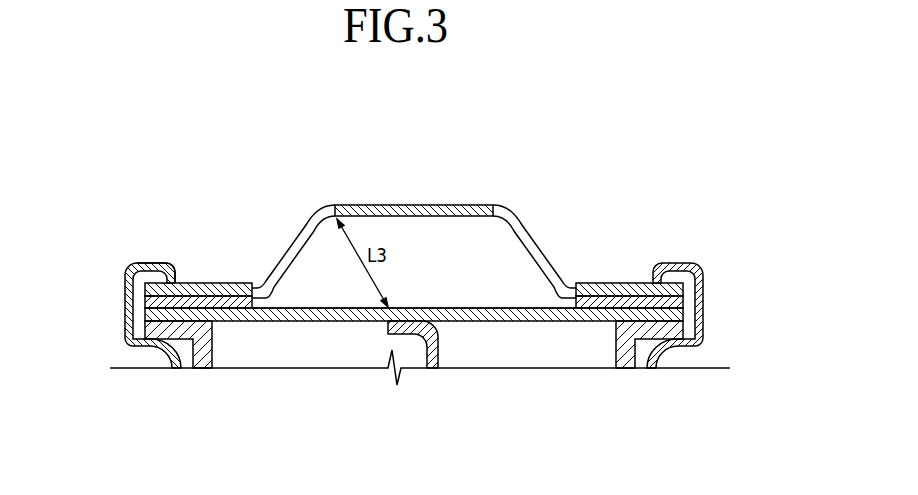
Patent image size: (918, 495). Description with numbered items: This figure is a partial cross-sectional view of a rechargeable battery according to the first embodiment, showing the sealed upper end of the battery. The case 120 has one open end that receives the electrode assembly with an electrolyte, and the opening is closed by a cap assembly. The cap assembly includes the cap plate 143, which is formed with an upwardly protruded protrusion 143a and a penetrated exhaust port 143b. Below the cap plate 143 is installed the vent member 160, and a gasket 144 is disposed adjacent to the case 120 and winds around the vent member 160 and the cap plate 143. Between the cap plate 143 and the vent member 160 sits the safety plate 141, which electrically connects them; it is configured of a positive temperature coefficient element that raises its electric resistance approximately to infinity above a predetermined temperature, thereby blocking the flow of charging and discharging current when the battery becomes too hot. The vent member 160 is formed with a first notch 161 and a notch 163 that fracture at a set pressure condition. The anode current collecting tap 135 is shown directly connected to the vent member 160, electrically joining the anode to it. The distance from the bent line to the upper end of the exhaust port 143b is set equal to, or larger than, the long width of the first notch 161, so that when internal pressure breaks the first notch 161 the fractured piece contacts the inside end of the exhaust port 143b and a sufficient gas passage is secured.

The case 120 is at (125, 300).
The anode current collecting tap 135 is at (426, 351).
The safety plate 141 is at (213, 292).
The cap plate 143 is at (622, 292).
The protrusion 143a is at (419, 207).
The exhaust port 143b is at (540, 237).
The gasket 144 is at (155, 262).
The vent member 160 is at (333, 322).
The first notch 161 is at (547, 312).
The notch 163 is at (283, 308).